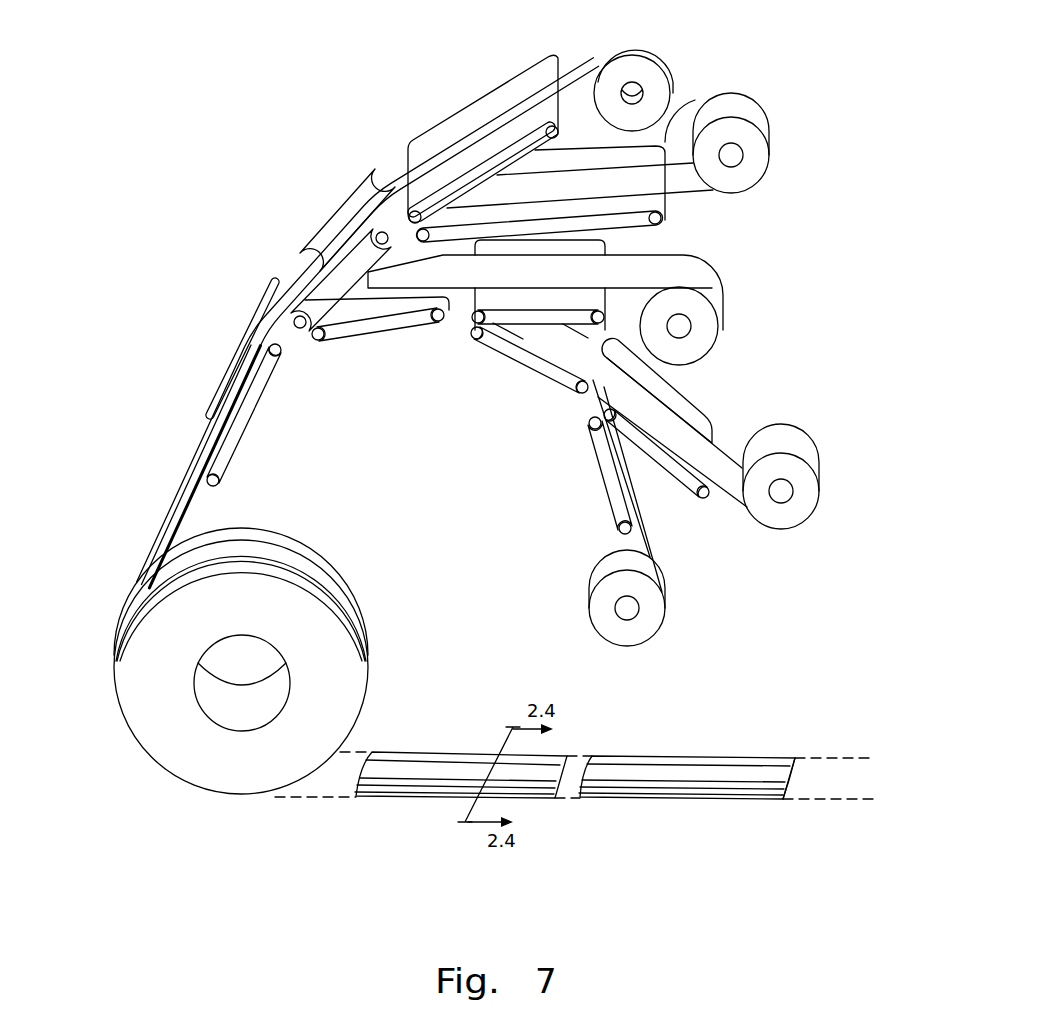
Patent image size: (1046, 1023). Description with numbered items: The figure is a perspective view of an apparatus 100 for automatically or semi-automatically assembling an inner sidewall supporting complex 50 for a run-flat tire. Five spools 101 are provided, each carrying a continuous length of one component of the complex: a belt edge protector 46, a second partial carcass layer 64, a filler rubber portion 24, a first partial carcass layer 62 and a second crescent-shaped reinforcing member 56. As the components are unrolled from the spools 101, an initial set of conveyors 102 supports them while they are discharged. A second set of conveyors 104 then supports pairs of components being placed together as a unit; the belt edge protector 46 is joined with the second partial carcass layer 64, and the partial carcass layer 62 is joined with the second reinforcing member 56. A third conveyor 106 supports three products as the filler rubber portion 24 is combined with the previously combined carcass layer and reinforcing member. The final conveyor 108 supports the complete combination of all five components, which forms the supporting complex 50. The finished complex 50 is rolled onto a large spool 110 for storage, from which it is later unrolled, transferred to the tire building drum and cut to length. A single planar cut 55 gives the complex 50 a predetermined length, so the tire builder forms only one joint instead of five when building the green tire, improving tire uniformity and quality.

The filler rubber portion 24 is at (663, 254).
The belt edge protector 46 is at (543, 100).
The inner sidewall supporting complex 50 is at (707, 745).
The single planar cut 55 is at (790, 776).
The second crescent-shaped reinforcing member 56 is at (654, 534).
The first partial carcass layer 62 is at (704, 418).
The second partial carcass layer 64 is at (708, 192).
The apparatus for forming sidewall supporting complexes 100 is at (262, 257).
The spools 101 is at (636, 55).
The initial set of conveyors 102 is at (420, 137).
The second set of conveyors 104 is at (316, 228).
The third conveyor 106 is at (372, 343).
The final conveyor 108 is at (226, 372).
The large spool 110 is at (123, 727).